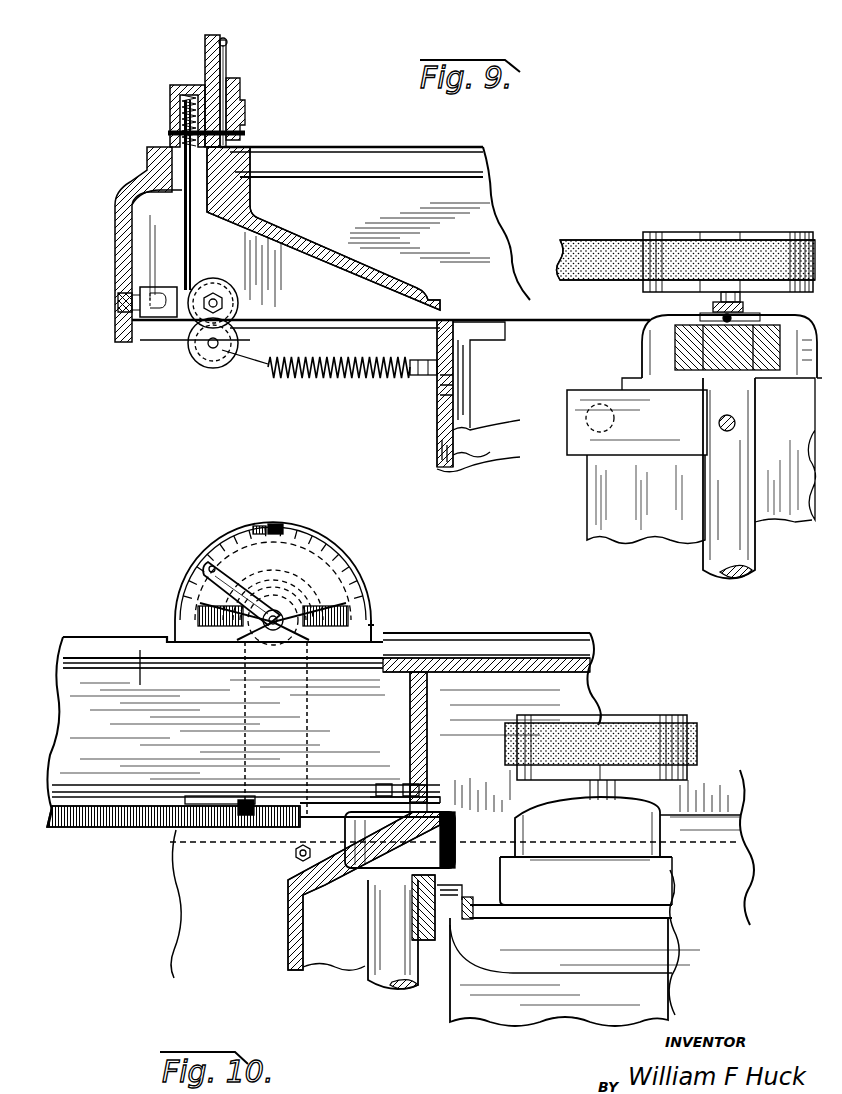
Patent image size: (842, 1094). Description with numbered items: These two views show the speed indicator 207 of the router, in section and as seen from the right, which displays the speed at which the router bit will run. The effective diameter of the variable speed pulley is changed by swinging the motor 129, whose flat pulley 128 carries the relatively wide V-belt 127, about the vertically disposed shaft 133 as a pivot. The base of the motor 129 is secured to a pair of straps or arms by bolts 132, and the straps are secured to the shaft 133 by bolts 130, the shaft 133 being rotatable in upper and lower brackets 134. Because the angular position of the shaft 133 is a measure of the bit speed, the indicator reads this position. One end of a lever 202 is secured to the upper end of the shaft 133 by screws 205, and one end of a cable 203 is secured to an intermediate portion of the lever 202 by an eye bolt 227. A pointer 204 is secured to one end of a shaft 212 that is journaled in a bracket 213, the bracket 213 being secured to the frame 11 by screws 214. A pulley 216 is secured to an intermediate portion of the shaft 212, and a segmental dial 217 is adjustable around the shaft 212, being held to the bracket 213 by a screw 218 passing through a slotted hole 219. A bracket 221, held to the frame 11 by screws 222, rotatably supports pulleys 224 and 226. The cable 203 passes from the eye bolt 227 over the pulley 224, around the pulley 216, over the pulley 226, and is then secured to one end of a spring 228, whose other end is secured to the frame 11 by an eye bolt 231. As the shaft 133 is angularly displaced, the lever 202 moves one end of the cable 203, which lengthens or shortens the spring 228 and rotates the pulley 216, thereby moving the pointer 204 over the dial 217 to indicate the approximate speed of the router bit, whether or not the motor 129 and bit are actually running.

In FIG. 9, the frame 11 is at (118, 226).
In FIG. 10, the frame 11 is at (98, 640).
In FIG. 9, the V-belt 127 is at (607, 240).
In FIG. 10, the V-belt 127 is at (698, 758).
In FIG. 10, the flat pulley 128 is at (656, 715).
In FIG. 9, the motor 129 is at (612, 540).
In FIG. 10, the motor 129 is at (645, 845).
In FIG. 9, the bolts 130 is at (736, 426).
In FIG. 9, the bolts 132 is at (592, 430).
In FIG. 10, the bolts 132 is at (474, 912).
In FIG. 9, the shaft 133 is at (713, 540).
In FIG. 10, the shaft 133 is at (372, 888).
In FIG. 9, the brackets 134 is at (680, 345).
In FIG. 10, the brackets 134 is at (456, 850).
In FIG. 9, the lever 202 is at (713, 307).
In FIG. 10, the lever 202 is at (173, 818).
In FIG. 9, the cable 203 is at (187, 235).
In FIG. 10, the cable 203 is at (245, 720).
In FIG. 9, the pointer 204 is at (247, 106).
In FIG. 10, the pointer 204 is at (208, 568).
In FIG. 9, the screws 205 is at (728, 292).
In FIG. 10, the screws 205 is at (414, 783).
In FIG. 9, the speed indicator 207 is at (232, 68).
In FIG. 10, the speed indicator 207 is at (374, 568).
In FIG. 9, the shaft 212 is at (168, 132).
In FIG. 9, the bracket 213 is at (173, 88).
In FIG. 10, the screws 214 is at (377, 613).
In FIG. 9, the pulley 216 is at (182, 106).
In FIG. 9, the segmental dial 217 is at (226, 96).
In FIG. 10, the segmental dial 217 is at (336, 546).
In FIG. 9, the screw 218 is at (227, 41).
In FIG. 10, the screw 218 is at (276, 524).
In FIG. 10, the slotted hole 219 is at (260, 527).
In FIG. 9, the bracket 221 is at (161, 318).
In FIG. 9, the screws 222 is at (118, 302).
In FIG. 9, the pulley 224 is at (239, 303).
In FIG. 10, the pulley 224 is at (250, 790).
In FIG. 9, the pulley 226 is at (208, 368).
In FIG. 10, the pulley 226 is at (296, 853).
In FIG. 9, the eye bolt 227 is at (761, 316).
In FIG. 10, the eye bolt 227 is at (245, 806).
In FIG. 9, the spring 228 is at (326, 378).
In FIG. 9, the eye bolt 231 is at (418, 376).